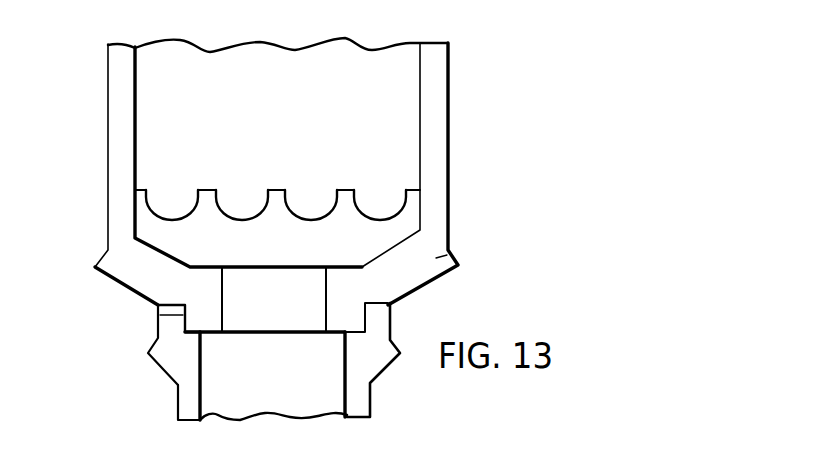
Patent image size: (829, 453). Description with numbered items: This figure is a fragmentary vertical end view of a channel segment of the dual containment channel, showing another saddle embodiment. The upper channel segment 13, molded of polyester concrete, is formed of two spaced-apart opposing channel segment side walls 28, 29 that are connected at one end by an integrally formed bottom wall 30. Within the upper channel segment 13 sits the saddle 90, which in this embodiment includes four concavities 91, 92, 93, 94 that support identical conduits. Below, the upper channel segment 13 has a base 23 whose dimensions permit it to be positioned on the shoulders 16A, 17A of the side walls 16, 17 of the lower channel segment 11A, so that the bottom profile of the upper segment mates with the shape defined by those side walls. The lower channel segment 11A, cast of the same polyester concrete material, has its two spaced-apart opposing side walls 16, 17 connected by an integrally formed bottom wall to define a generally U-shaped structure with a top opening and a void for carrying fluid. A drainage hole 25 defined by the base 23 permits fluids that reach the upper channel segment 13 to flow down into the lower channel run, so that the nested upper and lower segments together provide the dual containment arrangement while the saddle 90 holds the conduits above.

The channel segment 13 is at (449, 85).
The channel segment side wall 28 is at (112, 131).
The saddle 90 is at (410, 228).
The concavity 91 is at (188, 213).
The concavity 92 is at (258, 213).
The concavity 93 is at (327, 213).
The concavity 94 is at (394, 213).
The channel segment side wall 29 is at (448, 250).
The bottom wall 30 is at (200, 267).
The base 23 is at (200, 312).
The shoulder 17A is at (192, 330).
The drainage hole 25 is at (222, 325).
The channel segment 11A is at (167, 374).
The side wall 17 is at (192, 405).
The side wall 16 is at (370, 400).
The shoulder 16A is at (357, 315).